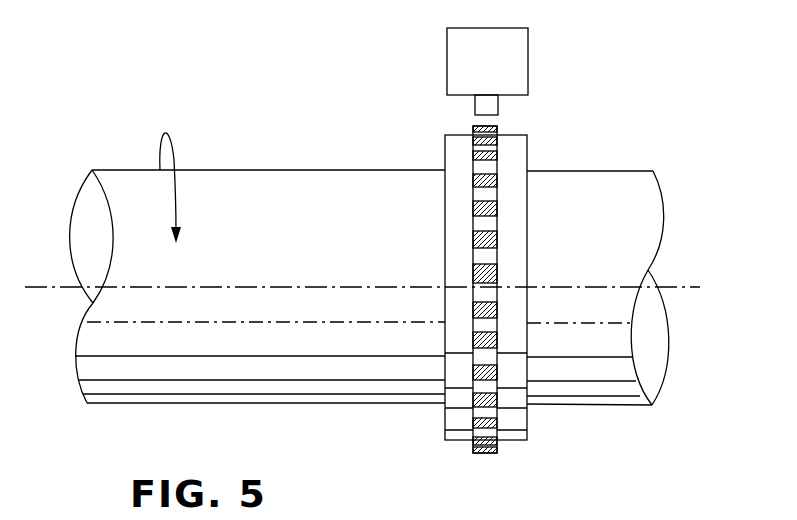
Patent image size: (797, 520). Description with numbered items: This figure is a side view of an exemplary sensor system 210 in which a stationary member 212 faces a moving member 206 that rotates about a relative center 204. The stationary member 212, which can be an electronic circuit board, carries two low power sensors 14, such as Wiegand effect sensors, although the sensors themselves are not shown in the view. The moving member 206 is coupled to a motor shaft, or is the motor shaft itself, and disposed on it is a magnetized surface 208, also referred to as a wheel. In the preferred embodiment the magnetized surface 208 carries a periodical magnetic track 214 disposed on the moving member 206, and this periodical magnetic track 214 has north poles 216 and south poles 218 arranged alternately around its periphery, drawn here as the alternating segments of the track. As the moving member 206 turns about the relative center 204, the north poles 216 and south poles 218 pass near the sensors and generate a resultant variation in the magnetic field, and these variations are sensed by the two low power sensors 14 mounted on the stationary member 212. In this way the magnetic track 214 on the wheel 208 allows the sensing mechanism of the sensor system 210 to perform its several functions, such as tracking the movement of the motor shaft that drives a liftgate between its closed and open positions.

The low power sensor 14 is at (470, 108).
The relative center 204 is at (670, 288).
The moving member 206 is at (360, 248).
The magnetized surface 208 is at (450, 432).
The sensor system 210 is at (643, 55).
The stationary member 212 is at (511, 72).
The periodical magnetic track 214 is at (483, 455).
The north poles 216 is at (497, 156).
The south poles 218 is at (497, 142).